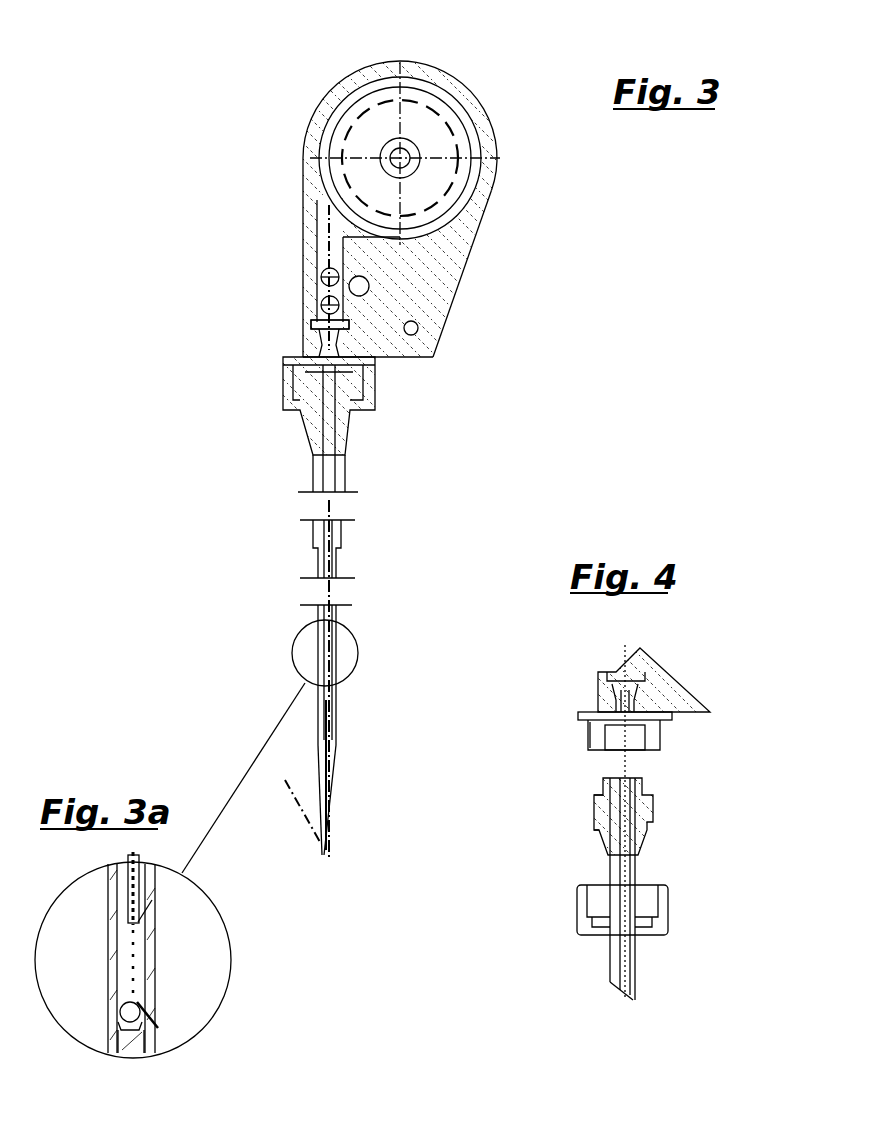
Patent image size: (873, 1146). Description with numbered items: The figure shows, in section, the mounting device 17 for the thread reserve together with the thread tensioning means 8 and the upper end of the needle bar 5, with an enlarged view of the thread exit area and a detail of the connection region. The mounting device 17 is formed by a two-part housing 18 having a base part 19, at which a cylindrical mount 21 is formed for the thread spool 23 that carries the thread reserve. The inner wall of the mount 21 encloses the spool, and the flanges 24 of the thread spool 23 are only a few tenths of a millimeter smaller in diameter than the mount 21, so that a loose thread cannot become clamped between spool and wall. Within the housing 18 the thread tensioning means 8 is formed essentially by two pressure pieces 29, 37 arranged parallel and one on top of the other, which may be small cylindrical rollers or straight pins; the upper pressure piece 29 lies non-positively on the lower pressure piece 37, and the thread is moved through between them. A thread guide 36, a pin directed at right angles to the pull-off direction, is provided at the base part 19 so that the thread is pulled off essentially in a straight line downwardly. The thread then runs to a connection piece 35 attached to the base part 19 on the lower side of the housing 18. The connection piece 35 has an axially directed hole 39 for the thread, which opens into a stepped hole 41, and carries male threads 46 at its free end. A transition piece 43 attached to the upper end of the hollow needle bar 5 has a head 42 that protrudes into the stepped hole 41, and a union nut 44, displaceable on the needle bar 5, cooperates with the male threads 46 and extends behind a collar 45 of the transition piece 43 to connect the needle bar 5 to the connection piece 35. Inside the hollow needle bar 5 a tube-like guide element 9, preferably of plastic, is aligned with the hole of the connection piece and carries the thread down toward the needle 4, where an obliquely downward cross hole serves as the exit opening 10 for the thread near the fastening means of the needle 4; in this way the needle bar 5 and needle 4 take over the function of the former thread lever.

In FIG. 3, the needle 4 is at (338, 777).
In FIG. 3A, the needle 4 is at (152, 1048).
In FIG. 3, the needle bar 5 is at (388, 612).
In FIG. 3A, the needle bar 5 is at (94, 961).
In FIG. 4, the needle bar 5 is at (655, 889).
In FIG. 3, the thread tensioning means 8 is at (254, 257).
In FIG. 3A, the guide element 9 is at (200, 925).
In FIG. 3A, the exit opening 10 is at (205, 958).
In FIG. 3, the mounting device 17 is at (485, 316).
In FIG. 3, the housing 18 is at (380, 113).
In FIG. 3, the base part 19 is at (423, 297).
In FIG. 4, the base part 19 is at (678, 679).
In FIG. 3, the mount 21 is at (441, 158).
In FIG. 3, the thread spool 23 is at (443, 153).
In FIG. 3, the flanges 24 is at (458, 158).
In FIG. 3, the upper pressure piece 29 is at (256, 338).
In FIG. 3, the connection piece 35 is at (282, 410).
In FIG. 4, the connection piece 35 is at (673, 755).
In FIG. 3, the thread guide 36 is at (292, 271).
In FIG. 3, the lower pressure piece 37 is at (330, 324).
In FIG. 4, the axially directed hole 39 is at (667, 732).
In FIG. 4, the stepped hole 41 is at (570, 756).
In FIG. 4, the head 42 is at (675, 816).
In FIG. 4, the transition piece 43 is at (551, 822).
In FIG. 4, the union nut 44 is at (574, 918).
In FIG. 4, the collar 45 is at (540, 812).
In FIG. 4, the male threads 46 is at (546, 732).